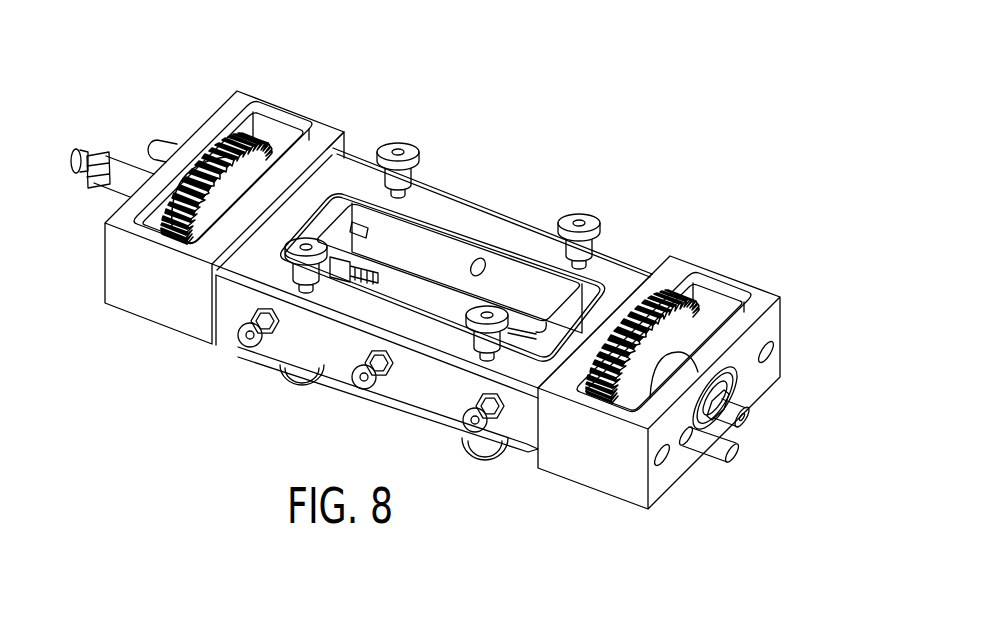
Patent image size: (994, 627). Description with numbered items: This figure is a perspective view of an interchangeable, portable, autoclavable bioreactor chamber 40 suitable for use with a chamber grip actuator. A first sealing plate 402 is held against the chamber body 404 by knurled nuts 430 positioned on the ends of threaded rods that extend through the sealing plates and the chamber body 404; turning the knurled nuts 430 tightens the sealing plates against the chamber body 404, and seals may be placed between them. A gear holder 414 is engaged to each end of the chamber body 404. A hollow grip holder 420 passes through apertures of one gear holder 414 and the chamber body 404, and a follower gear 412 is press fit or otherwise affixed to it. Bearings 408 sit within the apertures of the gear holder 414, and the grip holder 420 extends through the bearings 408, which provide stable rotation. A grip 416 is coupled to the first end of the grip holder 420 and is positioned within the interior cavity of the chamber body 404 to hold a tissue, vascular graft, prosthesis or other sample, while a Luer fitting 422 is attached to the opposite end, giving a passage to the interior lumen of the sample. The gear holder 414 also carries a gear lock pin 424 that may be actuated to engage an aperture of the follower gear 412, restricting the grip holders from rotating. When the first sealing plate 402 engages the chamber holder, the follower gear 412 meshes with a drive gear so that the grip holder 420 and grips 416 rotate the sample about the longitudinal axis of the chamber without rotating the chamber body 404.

The bioreactor chamber 40 is at (558, 87).
The first sealing plate 402 is at (270, 352).
The chamber body 404 is at (342, 352).
The bearings 408 is at (727, 367).
The follower gear 412 is at (685, 330).
The gear holder 414 is at (180, 297).
The grip 416 is at (362, 268).
The grip holder 420 is at (113, 187).
The Luer fitting 422 is at (98, 152).
The gear lock pin 424 is at (165, 143).
The knurled nuts 430 is at (592, 212).